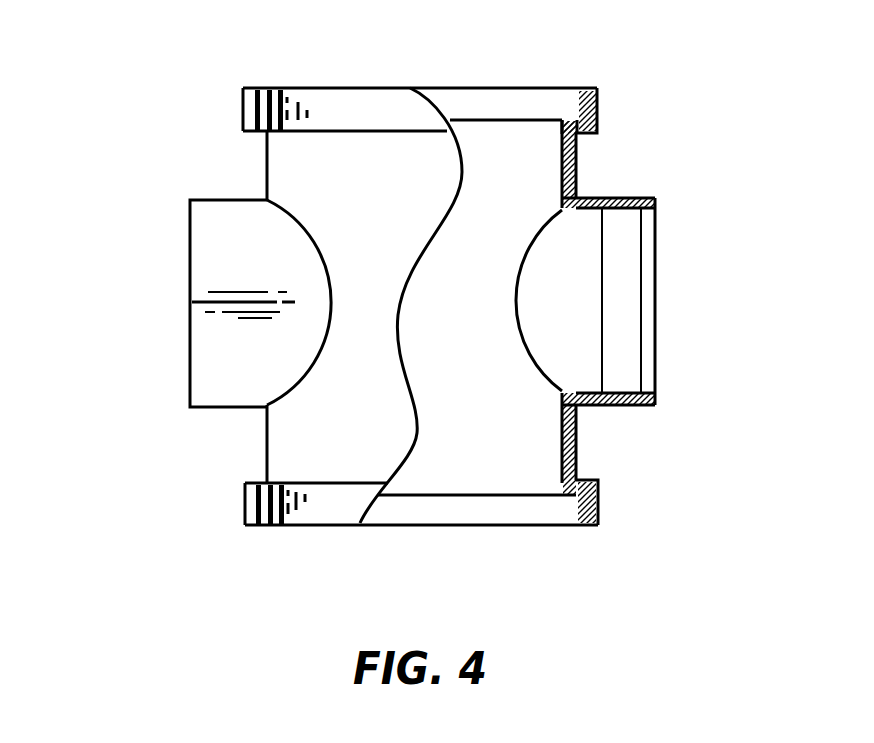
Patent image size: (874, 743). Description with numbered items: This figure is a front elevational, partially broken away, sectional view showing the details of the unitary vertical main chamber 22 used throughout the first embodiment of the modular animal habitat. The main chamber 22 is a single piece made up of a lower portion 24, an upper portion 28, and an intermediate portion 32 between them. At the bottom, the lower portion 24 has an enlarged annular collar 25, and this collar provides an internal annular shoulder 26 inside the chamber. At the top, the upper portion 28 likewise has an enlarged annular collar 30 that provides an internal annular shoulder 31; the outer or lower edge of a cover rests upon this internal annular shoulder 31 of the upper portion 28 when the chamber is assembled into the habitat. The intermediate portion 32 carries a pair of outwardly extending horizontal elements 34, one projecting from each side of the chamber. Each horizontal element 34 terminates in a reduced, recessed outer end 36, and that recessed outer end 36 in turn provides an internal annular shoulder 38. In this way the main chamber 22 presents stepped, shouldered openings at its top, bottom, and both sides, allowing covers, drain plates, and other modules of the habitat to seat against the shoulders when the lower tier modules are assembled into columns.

The unitary vertical main chamber 22 is at (132, 217).
The lower portion 24 is at (263, 443).
The enlarged annular collar 25 is at (245, 503).
The internal annular shoulder 26 is at (568, 525).
The upper portion 28 is at (578, 157).
The enlarged annular collar 30 is at (243, 112).
The internal annular shoulder 31 is at (572, 117).
The intermediate portion 32 is at (370, 250).
The horizontal element 34 is at (215, 198).
The outer end 36 is at (617, 425).
The internal annular shoulder 38 is at (602, 212).